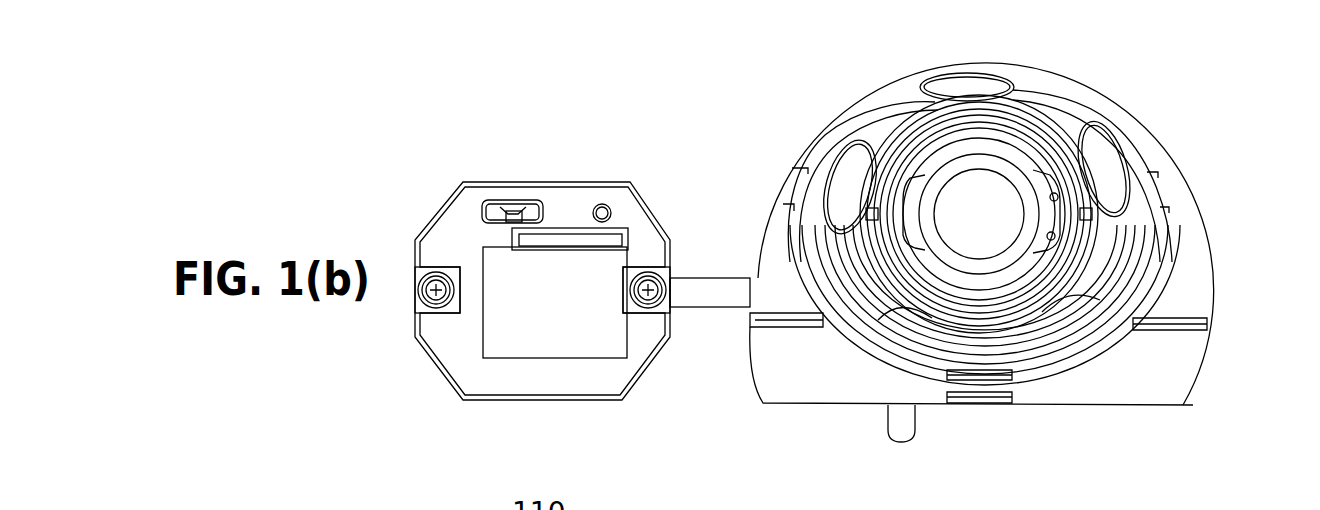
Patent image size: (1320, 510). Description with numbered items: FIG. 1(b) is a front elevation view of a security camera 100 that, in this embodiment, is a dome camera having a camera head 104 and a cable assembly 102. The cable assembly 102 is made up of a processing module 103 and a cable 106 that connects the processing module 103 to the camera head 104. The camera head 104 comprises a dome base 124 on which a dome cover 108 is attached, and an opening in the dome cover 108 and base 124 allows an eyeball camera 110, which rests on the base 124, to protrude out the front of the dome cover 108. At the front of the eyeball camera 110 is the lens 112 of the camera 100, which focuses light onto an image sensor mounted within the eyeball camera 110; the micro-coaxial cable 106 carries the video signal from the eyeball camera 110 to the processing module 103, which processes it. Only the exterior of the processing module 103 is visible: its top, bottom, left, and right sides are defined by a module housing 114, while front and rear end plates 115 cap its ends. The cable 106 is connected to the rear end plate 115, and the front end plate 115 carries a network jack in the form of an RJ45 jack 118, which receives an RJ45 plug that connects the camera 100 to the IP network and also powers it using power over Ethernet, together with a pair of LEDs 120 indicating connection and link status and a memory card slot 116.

The security camera 100 is at (996, 246).
The cable assembly 102 is at (720, 323).
The processing module 103 is at (413, 321).
The camera head 104 is at (822, 110).
The cable 106 is at (712, 292).
The dome cover 108 is at (1203, 290).
The eyeball camera 110 is at (1053, 110).
The lens 112 is at (1008, 223).
The module housing 114 is at (484, 184).
The end plate 115 is at (518, 385).
The memory card slot 116 is at (575, 243).
The RJ45 jack 118 is at (555, 313).
The LEDs 120 is at (504, 216).
The dome base 124 is at (1080, 396).